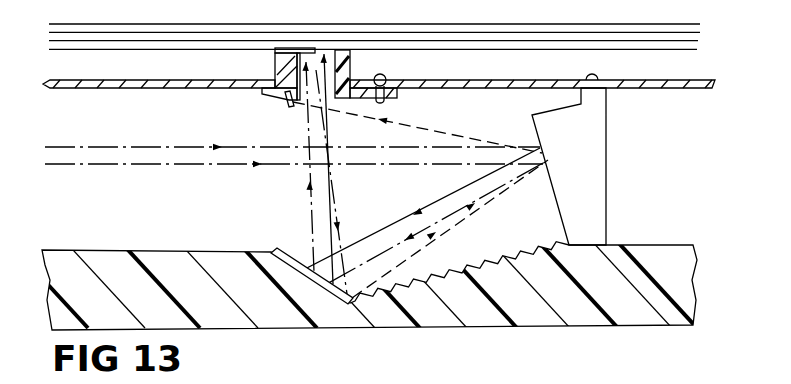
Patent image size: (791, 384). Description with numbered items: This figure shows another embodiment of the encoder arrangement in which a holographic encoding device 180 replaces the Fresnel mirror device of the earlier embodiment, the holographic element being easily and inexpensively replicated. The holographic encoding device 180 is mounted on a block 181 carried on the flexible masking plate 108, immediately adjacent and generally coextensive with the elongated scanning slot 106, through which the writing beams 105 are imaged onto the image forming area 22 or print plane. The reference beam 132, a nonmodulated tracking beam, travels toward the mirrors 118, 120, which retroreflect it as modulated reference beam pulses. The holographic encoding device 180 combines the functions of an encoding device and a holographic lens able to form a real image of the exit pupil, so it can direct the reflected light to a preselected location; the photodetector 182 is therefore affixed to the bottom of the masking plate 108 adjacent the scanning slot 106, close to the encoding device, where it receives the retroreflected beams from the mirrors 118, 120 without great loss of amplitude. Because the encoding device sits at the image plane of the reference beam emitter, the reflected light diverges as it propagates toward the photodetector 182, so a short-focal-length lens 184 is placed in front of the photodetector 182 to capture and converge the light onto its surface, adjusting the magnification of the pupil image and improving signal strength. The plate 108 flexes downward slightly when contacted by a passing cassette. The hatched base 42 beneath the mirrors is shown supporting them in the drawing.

The image forming area 22 is at (449, 38).
The masking plate 108 is at (135, 91).
The holographic encoding device 180 is at (300, 47).
The block 181 is at (275, 63).
The photodetector 182 is at (271, 100).
The short-focal-length lens 184 is at (287, 109).
The scanning slot 106 is at (318, 84).
The reference beam 132 is at (93, 146).
The writing beams 105 is at (123, 167).
The mirror 118 is at (560, 228).
The base 42 is at (555, 318).
The mirror 120 is at (294, 248).